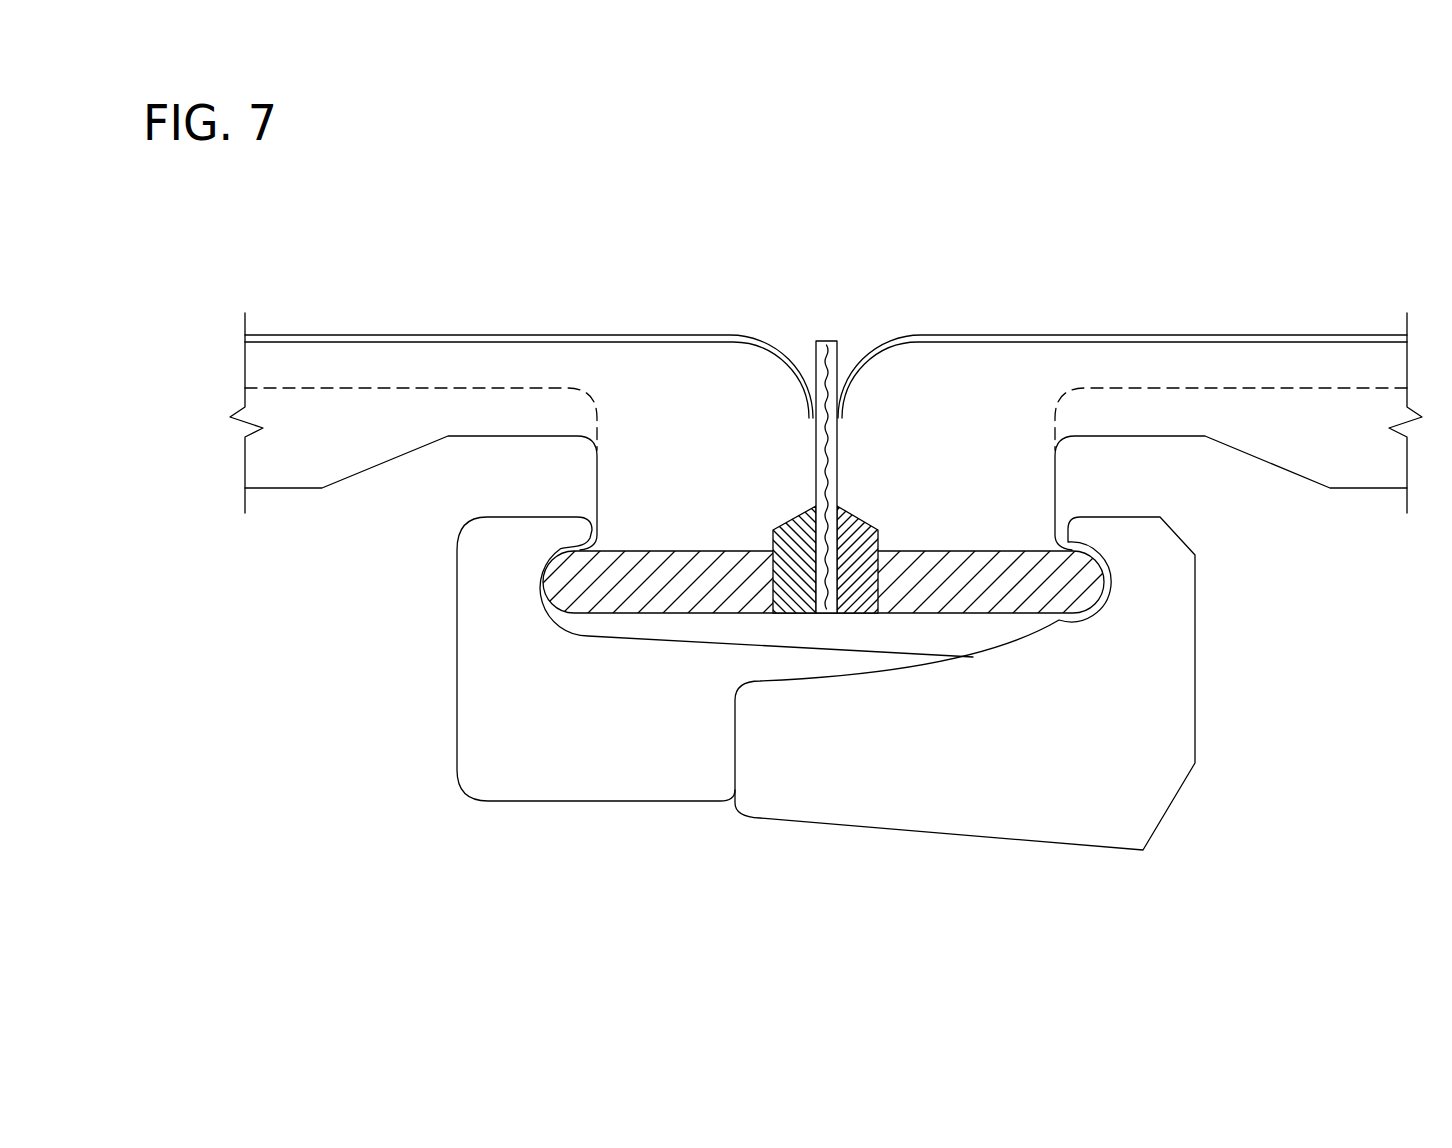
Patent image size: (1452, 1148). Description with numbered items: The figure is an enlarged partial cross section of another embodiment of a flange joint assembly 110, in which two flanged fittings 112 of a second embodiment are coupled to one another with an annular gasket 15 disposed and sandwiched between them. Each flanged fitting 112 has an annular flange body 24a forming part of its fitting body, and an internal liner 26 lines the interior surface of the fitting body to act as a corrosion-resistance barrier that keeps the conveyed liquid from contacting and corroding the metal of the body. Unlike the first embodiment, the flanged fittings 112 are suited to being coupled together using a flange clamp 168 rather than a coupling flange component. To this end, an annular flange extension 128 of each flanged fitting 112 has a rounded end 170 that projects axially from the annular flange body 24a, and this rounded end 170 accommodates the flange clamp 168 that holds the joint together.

The flange joint assembly 110 is at (1003, 260).
The flanged fitting 112 is at (593, 332).
The internal liner 26 is at (690, 337).
The annular flange body 24a is at (652, 490).
The rounded end 170 is at (523, 593).
The flange clamp 168 is at (863, 802).
The annular flange extension 128 is at (617, 605).
The annular gasket 15 is at (832, 345).